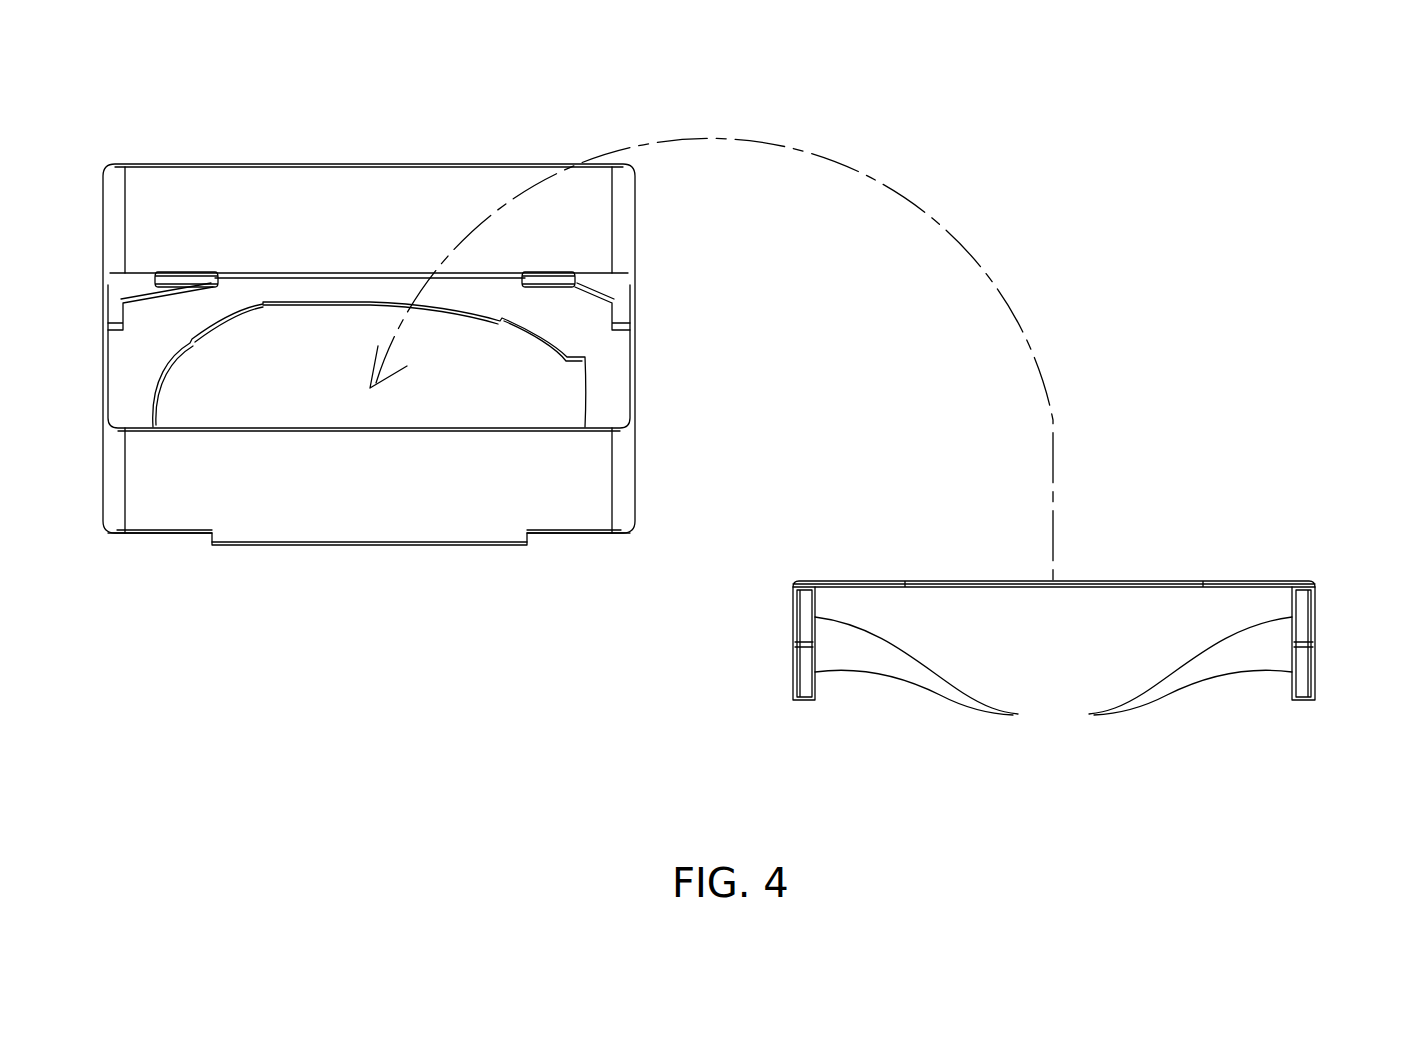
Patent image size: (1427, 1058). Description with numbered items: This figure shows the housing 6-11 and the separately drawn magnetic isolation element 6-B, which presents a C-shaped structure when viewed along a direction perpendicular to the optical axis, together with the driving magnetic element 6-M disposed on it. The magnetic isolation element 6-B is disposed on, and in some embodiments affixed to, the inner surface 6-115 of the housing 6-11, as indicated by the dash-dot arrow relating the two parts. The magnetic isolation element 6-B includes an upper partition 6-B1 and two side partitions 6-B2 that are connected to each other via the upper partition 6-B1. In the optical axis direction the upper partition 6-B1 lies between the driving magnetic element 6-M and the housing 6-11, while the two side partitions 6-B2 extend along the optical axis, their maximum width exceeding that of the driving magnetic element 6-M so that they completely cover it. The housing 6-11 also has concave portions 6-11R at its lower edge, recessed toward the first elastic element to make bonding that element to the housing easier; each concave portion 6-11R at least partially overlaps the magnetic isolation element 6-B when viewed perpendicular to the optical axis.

The housing 6-11 is at (429, 343).
The concave portion 6-11R is at (597, 600).
The inner surface 6-115 is at (587, 332).
The magnetic isolation element 6-B is at (1053, 576).
The upper partition 6-B1 is at (866, 580).
The side partition 6-B2 is at (1362, 627).
The driving magnetic element 6-M is at (1094, 714).